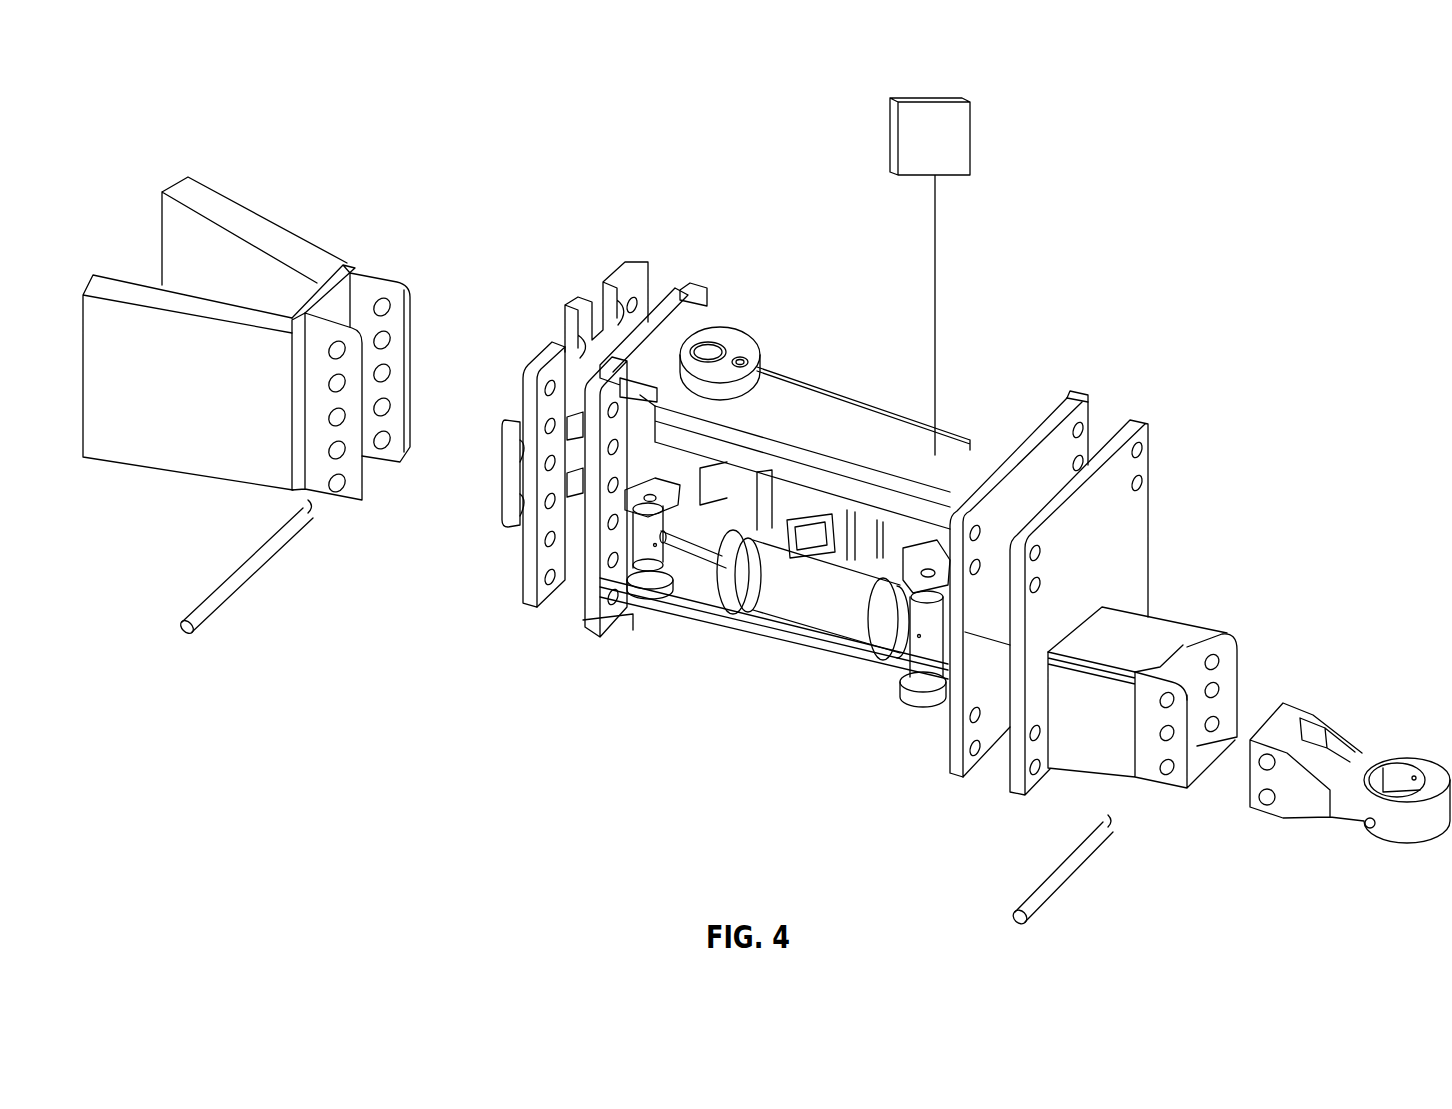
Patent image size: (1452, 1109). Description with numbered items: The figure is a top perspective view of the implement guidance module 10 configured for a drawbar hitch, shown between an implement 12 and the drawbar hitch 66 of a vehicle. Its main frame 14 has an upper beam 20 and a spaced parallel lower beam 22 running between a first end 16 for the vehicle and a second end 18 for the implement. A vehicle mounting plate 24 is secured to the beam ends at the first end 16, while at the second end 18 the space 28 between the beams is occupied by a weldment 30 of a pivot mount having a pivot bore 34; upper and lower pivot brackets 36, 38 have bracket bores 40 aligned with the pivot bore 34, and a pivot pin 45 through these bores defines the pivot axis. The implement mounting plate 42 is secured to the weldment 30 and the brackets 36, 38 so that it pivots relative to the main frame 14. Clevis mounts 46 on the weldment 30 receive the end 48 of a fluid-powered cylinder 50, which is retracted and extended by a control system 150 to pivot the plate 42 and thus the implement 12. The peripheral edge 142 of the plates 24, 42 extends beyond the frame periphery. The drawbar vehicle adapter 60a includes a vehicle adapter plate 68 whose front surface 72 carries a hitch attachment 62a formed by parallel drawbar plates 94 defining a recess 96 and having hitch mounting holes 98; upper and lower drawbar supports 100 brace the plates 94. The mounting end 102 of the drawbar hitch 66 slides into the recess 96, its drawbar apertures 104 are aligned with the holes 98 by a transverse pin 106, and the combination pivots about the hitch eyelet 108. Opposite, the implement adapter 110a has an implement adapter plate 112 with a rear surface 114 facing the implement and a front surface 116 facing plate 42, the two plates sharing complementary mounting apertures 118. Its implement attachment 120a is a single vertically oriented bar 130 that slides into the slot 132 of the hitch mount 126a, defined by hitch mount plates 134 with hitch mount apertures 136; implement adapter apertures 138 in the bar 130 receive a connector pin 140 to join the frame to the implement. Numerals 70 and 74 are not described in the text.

The implement guidance module 10 is at (873, 281).
The implement 12 is at (208, 189).
The main frame 14 is at (950, 432).
The first end 16 is at (1072, 402).
The second end 18 is at (690, 292).
The upper beam 20 is at (818, 387).
The lower beam 22 is at (705, 600).
The vehicle mounting plate 24 is at (990, 640).
The space 28 is at (780, 485).
The weldment 30 is at (670, 465).
The pivot bore 34 is at (800, 487).
The upper pivot bracket 36 is at (722, 335).
The lower pivot bracket 38 is at (672, 612).
The bracket bores 40 is at (747, 330).
The implement mounting plate 42 is at (590, 637).
The pivot pin 45 is at (703, 350).
The clevis mounts 46 is at (632, 590).
The cylinder end 48 is at (752, 572).
The fluid-powered cylinder 50 is at (838, 607).
The drawbar vehicle adapter 60a is at (1268, 498).
The hitch attachment 62a is at (1165, 612).
The drawbar hitch 66 is at (1372, 745).
The vehicle adapter plate 68 is at (1132, 421).
The mounting holes 70 is at (975, 752).
The front surface 72 is at (1135, 505).
The tab 74 is at (1105, 440).
The drawbar plates 94 is at (1225, 663).
The recess 96 is at (1205, 757).
The hitch mounting holes 98 is at (1167, 777).
The drawbar supports 100 is at (1117, 605).
The mounting end 102 is at (1293, 715).
The drawbar apertures 104 is at (1270, 797).
The transverse pin 106 is at (1065, 882).
The hitch eyelet 108 is at (1410, 770).
The implement adapter 110a is at (513, 256).
The implement adapter plate 112 is at (530, 613).
The rear surface 114 is at (520, 575).
The front surface 116 is at (583, 322).
The mounting apertures 118 is at (550, 574).
The implement attachment 120a is at (517, 405).
The hitch mount 126a is at (362, 272).
The vertically-oriented bar 130 is at (504, 506).
The slot 132 is at (372, 470).
The hitch mount plates 134 is at (318, 405).
The hitch mount apertures 136 is at (340, 495).
The implement adapter apertures 138 is at (504, 464).
The connector pin 140 is at (243, 577).
The peripheral edge 142 is at (702, 298).
The control system 150 is at (958, 137).